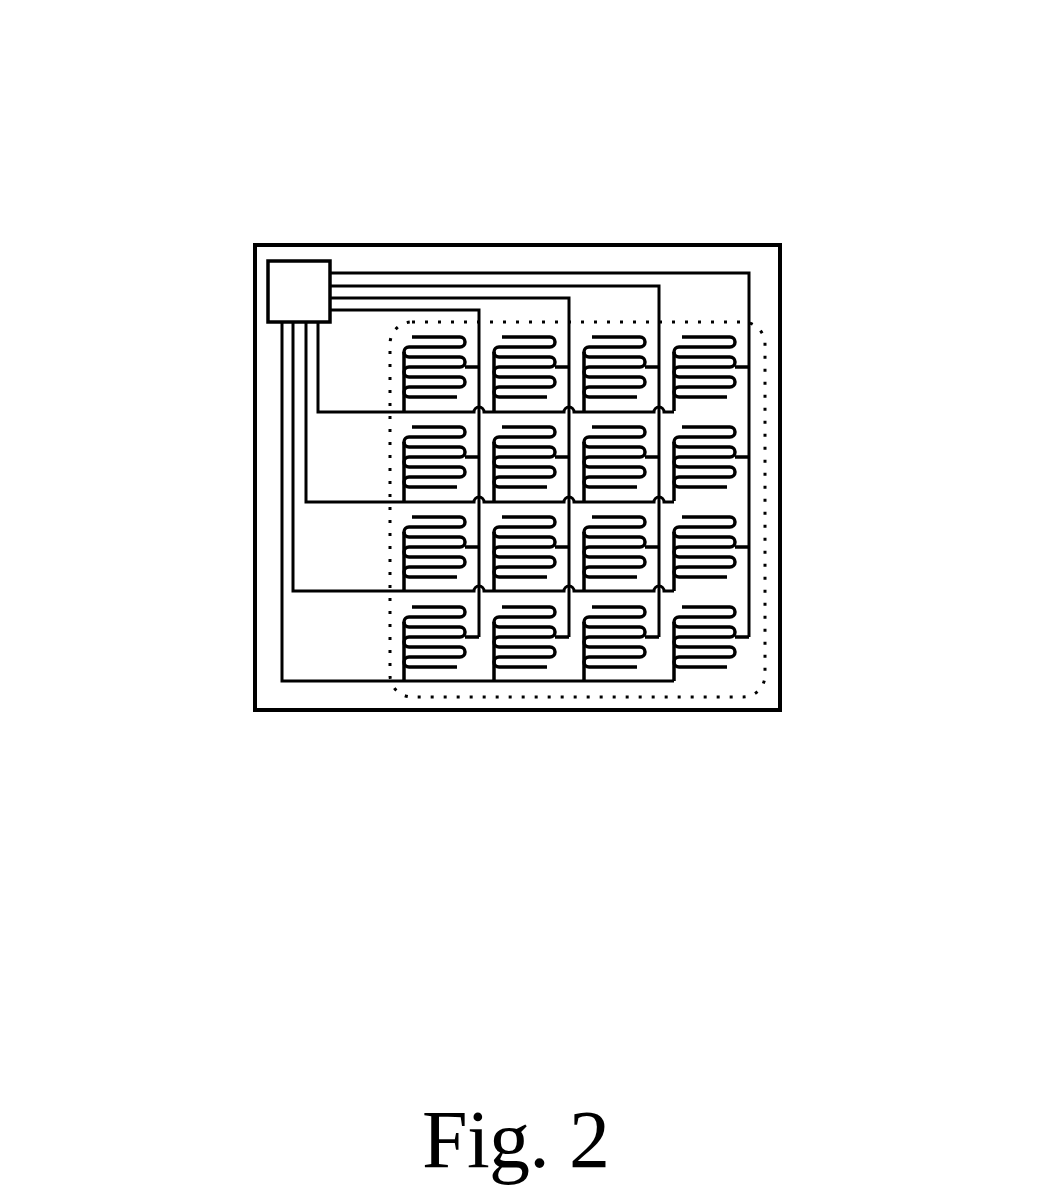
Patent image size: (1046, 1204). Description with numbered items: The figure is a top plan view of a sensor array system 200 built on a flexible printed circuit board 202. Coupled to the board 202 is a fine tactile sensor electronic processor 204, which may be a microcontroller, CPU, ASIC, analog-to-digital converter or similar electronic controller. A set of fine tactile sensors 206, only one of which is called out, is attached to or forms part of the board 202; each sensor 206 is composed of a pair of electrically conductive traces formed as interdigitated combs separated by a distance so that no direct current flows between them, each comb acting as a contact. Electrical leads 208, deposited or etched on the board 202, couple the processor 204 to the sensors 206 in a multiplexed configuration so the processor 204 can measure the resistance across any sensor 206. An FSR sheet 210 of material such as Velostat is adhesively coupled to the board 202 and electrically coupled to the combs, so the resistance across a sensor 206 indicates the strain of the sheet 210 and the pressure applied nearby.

The sensor array system 200 is at (190, 102).
The flexible printed circuit board 202 is at (273, 698).
The fine tactile sensor electronic processor 204 is at (268, 290).
The fine tactile sensor 206 is at (404, 458).
The electrical lead 208 is at (292, 378).
The FSR sheet 210 is at (765, 611).